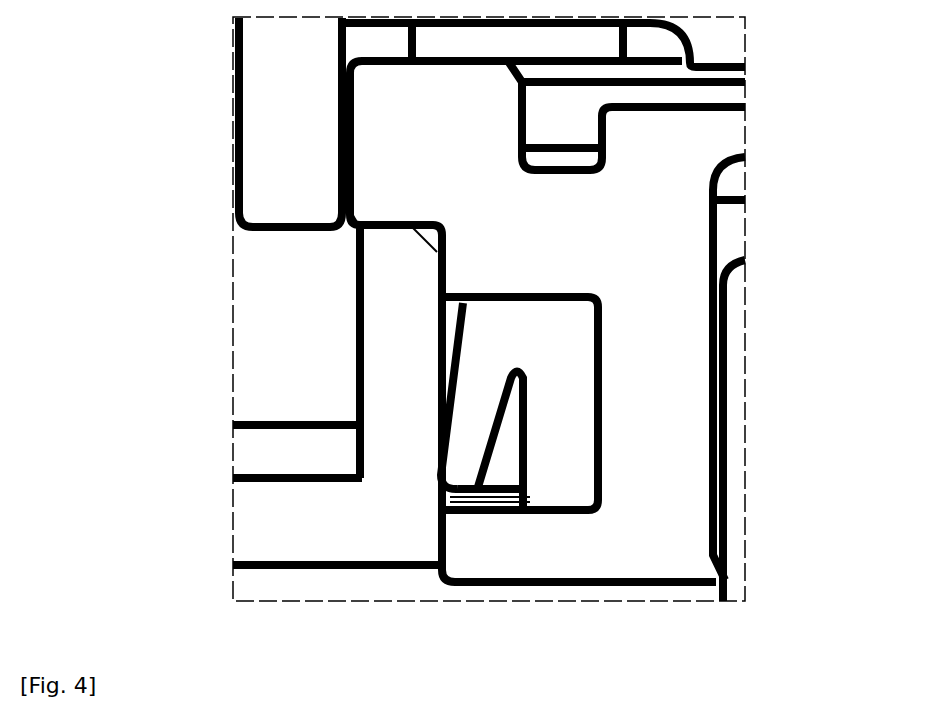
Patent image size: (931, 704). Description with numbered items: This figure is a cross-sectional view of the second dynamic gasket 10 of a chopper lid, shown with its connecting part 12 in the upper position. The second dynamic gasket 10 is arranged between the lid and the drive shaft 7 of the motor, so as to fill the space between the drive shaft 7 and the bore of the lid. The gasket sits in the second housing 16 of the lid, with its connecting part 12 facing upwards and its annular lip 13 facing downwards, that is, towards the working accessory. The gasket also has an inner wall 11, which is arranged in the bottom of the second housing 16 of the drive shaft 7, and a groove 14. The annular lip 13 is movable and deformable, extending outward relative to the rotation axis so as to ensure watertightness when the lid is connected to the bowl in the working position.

The drive shaft 7 is at (548, 233).
The second dynamic gasket 10 is at (605, 475).
The inner wall 11 is at (565, 402).
The connecting part 12 is at (535, 330).
The annular lip 13 is at (460, 443).
The groove 14 is at (497, 466).
The second housing 16 is at (452, 505).